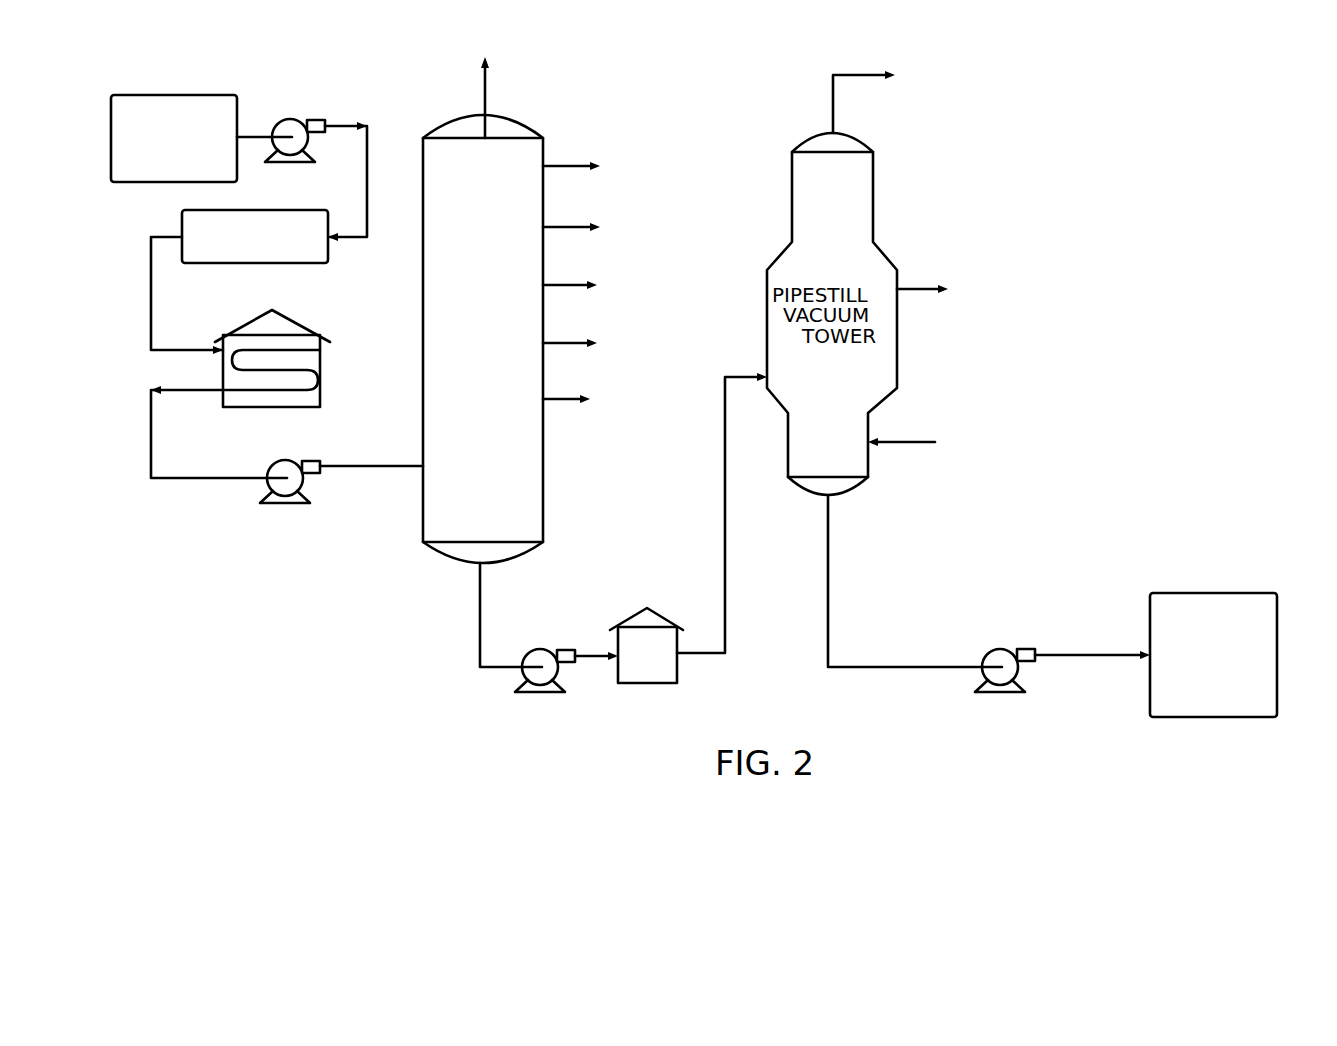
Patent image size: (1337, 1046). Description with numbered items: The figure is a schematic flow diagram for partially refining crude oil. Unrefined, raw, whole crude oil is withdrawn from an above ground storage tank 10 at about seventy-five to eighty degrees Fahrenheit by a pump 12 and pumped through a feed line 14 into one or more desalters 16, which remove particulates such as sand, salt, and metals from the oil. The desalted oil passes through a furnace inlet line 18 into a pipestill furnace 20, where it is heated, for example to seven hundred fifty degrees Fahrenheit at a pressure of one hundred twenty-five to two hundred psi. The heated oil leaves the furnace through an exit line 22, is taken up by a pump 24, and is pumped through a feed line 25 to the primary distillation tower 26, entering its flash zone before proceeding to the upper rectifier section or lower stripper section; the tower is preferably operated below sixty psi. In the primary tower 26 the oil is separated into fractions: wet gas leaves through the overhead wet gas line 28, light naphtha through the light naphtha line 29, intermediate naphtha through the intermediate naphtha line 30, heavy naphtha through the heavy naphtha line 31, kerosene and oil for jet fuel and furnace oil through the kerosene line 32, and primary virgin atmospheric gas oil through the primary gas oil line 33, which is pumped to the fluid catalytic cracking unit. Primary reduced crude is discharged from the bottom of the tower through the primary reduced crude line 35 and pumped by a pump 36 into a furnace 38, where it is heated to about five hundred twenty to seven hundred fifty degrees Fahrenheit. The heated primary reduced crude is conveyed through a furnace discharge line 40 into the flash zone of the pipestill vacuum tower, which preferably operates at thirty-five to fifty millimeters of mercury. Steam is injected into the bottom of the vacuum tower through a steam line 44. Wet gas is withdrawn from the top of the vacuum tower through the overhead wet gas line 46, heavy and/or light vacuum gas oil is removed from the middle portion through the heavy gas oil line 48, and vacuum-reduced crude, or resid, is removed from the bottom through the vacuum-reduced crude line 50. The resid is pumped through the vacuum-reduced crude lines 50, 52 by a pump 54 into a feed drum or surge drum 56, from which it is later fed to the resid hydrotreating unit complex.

The storage tank 10 is at (183, 175).
The pump 12 is at (297, 118).
The feed line 14 is at (370, 187).
The desalter 16 is at (273, 252).
The furnace inlet line 18 is at (151, 292).
The pipestill furnace 20 is at (307, 325).
The exit line 22 is at (143, 428).
The pump 24 is at (303, 483).
The feed line 25 is at (367, 466).
The primary distillation tower 26 is at (422, 352).
The overhead wet gas line 28 is at (488, 85).
The light naphtha line 29 is at (568, 165).
The intermediate naphtha line 30 is at (563, 226).
The heavy naphtha line 31 is at (562, 285).
The kerosene line 32 is at (562, 342).
The primary gas oil line 33 is at (562, 398).
The primary reduced crude line 35 is at (478, 618).
The pump 36 is at (540, 650).
The furnace 38 is at (648, 683).
The furnace discharge line 40 is at (722, 545).
The steam line 44 is at (905, 443).
The overhead wet gas line 46 is at (837, 108).
The heavy gas oil line 48 is at (915, 288).
The vacuum-reduced crude line 50 is at (828, 638).
The vacuum-reduced crude line 52 is at (1077, 653).
The pump 54 is at (998, 648).
The surge drum 56 is at (1222, 665).